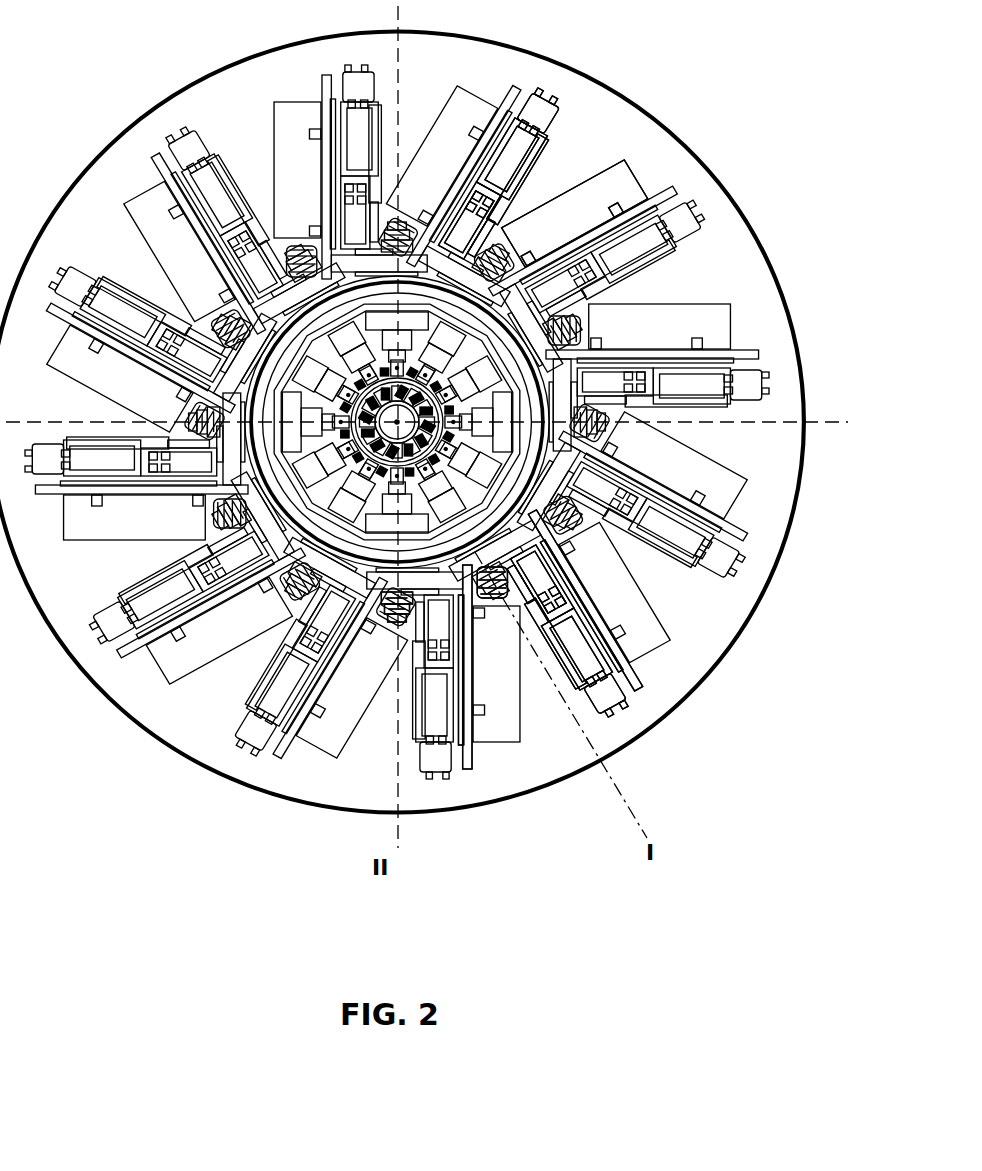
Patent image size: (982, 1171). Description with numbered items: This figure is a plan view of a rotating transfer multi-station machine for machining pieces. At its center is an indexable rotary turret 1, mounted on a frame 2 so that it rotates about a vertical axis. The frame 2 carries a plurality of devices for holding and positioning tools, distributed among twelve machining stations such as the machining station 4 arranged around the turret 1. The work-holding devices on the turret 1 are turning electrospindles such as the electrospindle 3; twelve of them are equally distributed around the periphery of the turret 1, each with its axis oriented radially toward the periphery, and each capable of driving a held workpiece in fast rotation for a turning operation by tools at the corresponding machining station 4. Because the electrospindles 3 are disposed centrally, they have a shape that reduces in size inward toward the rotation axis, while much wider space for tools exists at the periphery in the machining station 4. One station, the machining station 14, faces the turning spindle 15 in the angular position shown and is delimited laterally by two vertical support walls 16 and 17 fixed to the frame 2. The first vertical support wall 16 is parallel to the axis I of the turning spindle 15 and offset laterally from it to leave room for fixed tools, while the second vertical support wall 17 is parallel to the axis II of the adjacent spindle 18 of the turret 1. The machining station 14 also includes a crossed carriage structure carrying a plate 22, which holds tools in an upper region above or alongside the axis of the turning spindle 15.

The indexable rotary turret 1 is at (293, 247).
The frame 2 is at (623, 95).
The turning electrospindle 3 is at (505, 240).
The machining station 4 is at (567, 138).
The machining station 14 is at (552, 725).
The turning spindle 15 is at (486, 594).
The first vertical support wall 16 is at (647, 687).
The second vertical support wall 17 is at (463, 768).
The adjacent spindle 18 is at (398, 628).
The plate 22 is at (556, 668).